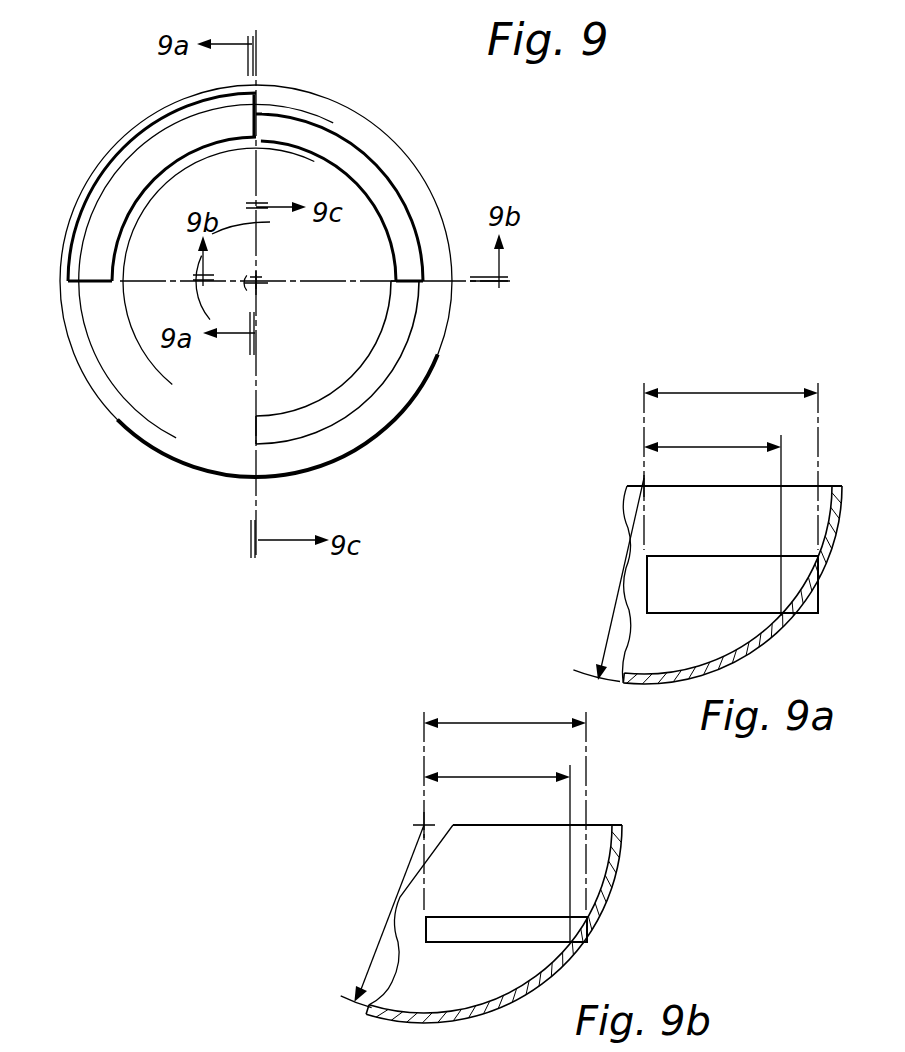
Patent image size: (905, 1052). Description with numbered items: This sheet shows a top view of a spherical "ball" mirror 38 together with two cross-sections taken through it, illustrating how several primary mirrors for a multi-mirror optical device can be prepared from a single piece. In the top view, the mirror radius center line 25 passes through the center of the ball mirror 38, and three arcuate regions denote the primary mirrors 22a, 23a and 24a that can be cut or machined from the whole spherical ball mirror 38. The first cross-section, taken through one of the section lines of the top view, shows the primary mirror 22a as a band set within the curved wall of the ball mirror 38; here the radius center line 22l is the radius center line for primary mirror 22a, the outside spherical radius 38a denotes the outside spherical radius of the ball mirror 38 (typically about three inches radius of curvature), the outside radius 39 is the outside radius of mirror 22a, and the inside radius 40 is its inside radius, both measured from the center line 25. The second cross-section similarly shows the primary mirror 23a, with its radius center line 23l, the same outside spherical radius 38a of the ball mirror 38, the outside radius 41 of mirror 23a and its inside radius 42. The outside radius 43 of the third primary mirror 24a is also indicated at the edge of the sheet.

In FIG. 9, the primary mirror 22a is at (136, 160).
In FIG. 9A, the primary mirror 22a is at (762, 603).
In FIG. 9, the primary mirror 23a is at (378, 165).
In FIG. 9B, the primary mirror 23a is at (560, 935).
In FIG. 9, the primary mirror 24a is at (392, 348).
In FIG. 9, the mirror radius center line 25 is at (258, 284).
In FIG. 9A, the mirror radius center line 25 is at (644, 418).
In FIG. 9B, the mirror radius center line 25 is at (424, 742).
In FIG. 9, the spherical ball mirror 38 is at (152, 432).
In FIG. 9A, the outside spherical radius 38a is at (620, 580).
In FIG. 9B, the outside spherical radius 38a is at (392, 907).
In FIG. 9A, the outside radius 39 is at (715, 380).
In FIG. 9A, the inside radius 40 is at (708, 437).
In FIG. 9B, the outside radius 41 is at (493, 713).
In FIG. 9B, the inside radius 42 is at (493, 765).
In FIG. 9A, the radius center line 22l is at (640, 478).
In FIG. 9B, the radius center line 23l is at (424, 825).
In FIG. 9B, the outside radius 43 is at (258, 1051).